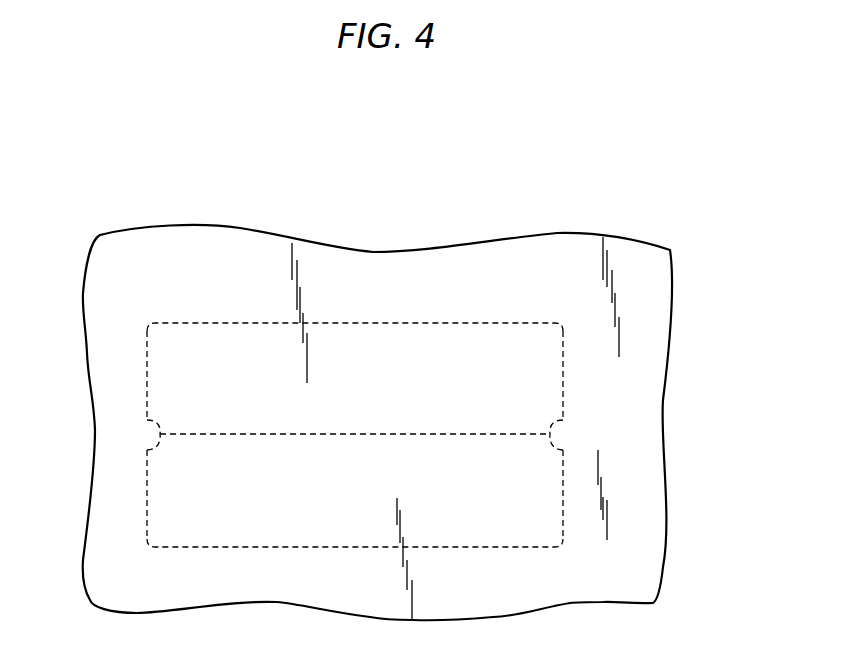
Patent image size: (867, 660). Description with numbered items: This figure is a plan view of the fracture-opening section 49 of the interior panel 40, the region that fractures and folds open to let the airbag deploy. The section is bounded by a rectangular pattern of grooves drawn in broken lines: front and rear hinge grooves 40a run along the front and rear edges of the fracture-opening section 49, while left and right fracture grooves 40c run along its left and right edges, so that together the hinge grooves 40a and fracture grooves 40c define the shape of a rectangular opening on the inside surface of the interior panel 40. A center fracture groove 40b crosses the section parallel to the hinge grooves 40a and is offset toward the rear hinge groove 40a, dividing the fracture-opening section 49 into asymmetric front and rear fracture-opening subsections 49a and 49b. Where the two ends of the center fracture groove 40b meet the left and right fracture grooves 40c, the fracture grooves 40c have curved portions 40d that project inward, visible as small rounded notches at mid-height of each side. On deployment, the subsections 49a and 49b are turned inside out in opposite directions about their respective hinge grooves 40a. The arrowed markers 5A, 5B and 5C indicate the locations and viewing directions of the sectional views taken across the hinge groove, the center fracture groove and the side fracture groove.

The interior panel 40 is at (634, 314).
The hinge grooves 40a is at (470, 320).
The center fracture groove 40b is at (463, 435).
The fracture grooves 40c is at (143, 380).
The curved portions 40d is at (143, 420).
The fracture-opening section 49 is at (443, 184).
The front fracture-opening subsection 49a is at (327, 340).
The rear fracture-opening subsection 49b is at (367, 475).
The section line for FIG. 5A is at (263, 328).
The section line for FIG. 5B is at (263, 443).
The section line for FIG. 5C is at (558, 348).